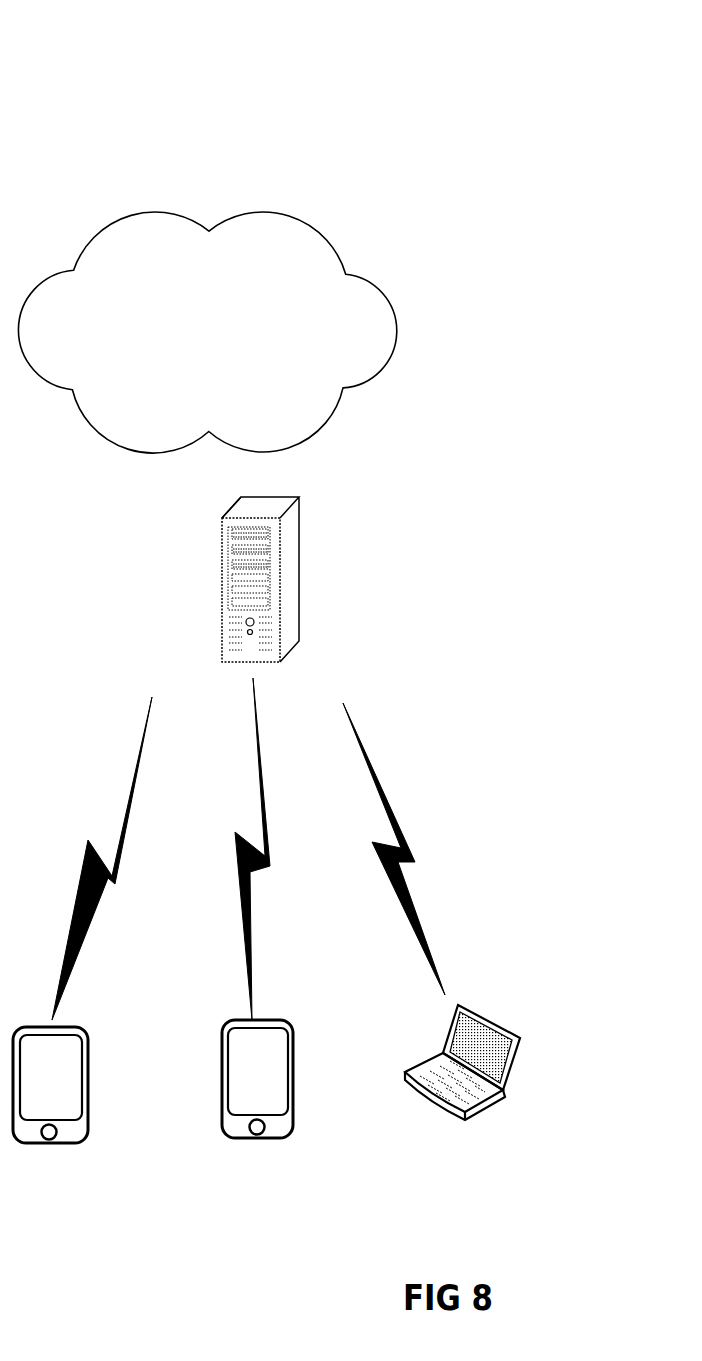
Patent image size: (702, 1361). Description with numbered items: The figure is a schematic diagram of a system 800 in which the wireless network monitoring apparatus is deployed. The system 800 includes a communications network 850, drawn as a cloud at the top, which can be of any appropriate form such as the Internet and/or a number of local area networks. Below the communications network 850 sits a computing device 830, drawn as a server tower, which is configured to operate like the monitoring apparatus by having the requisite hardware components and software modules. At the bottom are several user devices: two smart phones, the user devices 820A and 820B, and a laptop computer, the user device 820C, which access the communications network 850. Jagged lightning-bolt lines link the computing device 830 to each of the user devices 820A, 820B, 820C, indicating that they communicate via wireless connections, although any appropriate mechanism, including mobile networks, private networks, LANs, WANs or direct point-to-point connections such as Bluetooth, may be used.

The system 800 is at (157, 76).
The communications network 850 is at (207, 332).
The computing device 830 is at (224, 579).
The user device 820A is at (90, 1085).
The user device 820B is at (297, 1079).
The user device 820C is at (504, 1062).